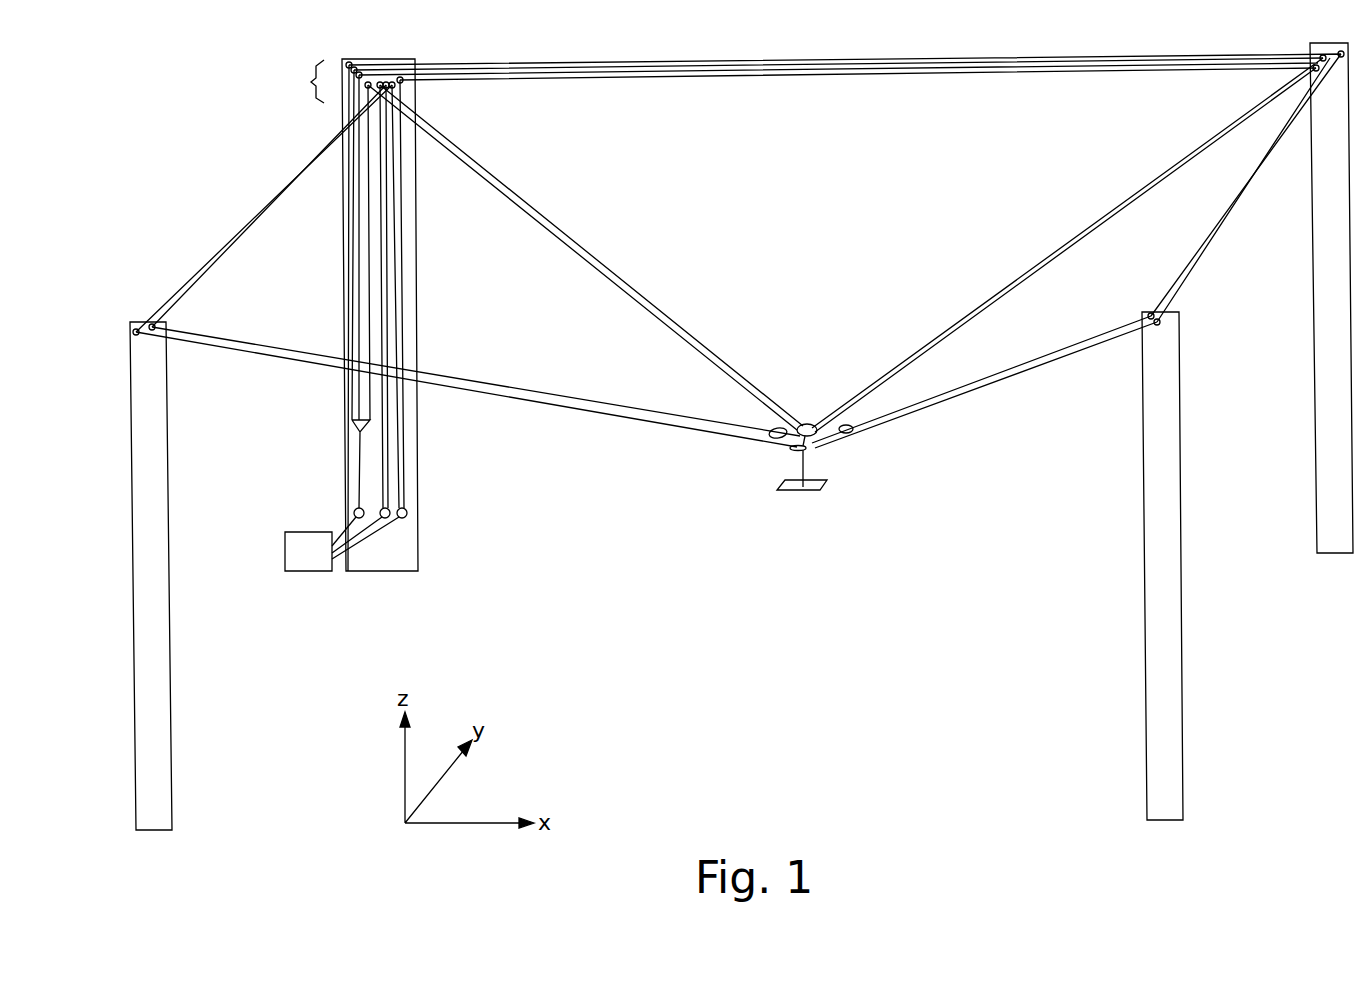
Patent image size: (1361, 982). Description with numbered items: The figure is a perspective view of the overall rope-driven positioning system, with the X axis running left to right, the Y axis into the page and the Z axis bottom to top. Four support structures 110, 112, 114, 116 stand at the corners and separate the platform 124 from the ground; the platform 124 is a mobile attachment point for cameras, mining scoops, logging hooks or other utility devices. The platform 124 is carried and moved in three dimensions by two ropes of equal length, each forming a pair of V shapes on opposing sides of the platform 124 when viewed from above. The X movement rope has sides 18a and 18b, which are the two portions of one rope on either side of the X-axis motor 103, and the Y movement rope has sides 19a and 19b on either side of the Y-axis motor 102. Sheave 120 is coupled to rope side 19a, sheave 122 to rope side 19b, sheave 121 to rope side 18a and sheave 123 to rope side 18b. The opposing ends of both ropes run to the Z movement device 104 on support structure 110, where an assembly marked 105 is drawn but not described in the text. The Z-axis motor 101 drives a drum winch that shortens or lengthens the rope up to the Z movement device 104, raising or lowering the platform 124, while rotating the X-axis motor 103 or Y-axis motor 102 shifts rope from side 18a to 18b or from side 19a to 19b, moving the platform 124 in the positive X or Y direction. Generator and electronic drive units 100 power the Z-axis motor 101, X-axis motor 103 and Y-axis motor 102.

The X movement rope side 18a is at (728, 72).
The X movement rope side 18b is at (250, 250).
The Y movement rope side 19a is at (893, 70).
The Y movement rope side 19b is at (958, 68).
The generator and electronic drive units 100 is at (285, 548).
The Z-axis motor 101 is at (354, 512).
The Y-axis motor 102 is at (388, 506).
The X-axis motor 103 is at (408, 514).
The Z movement device 104 is at (352, 426).
The pulley arrangement 105 is at (310, 82).
The support structure 110 is at (420, 560).
The support structure 112 is at (1310, 519).
The support structure 114 is at (1142, 771).
The support structure 116 is at (172, 752).
The sheave 120 is at (808, 422).
The sheave 121 is at (905, 415).
The sheave 122 is at (783, 456).
The sheave 123 is at (766, 428).
The platform 124 is at (832, 484).